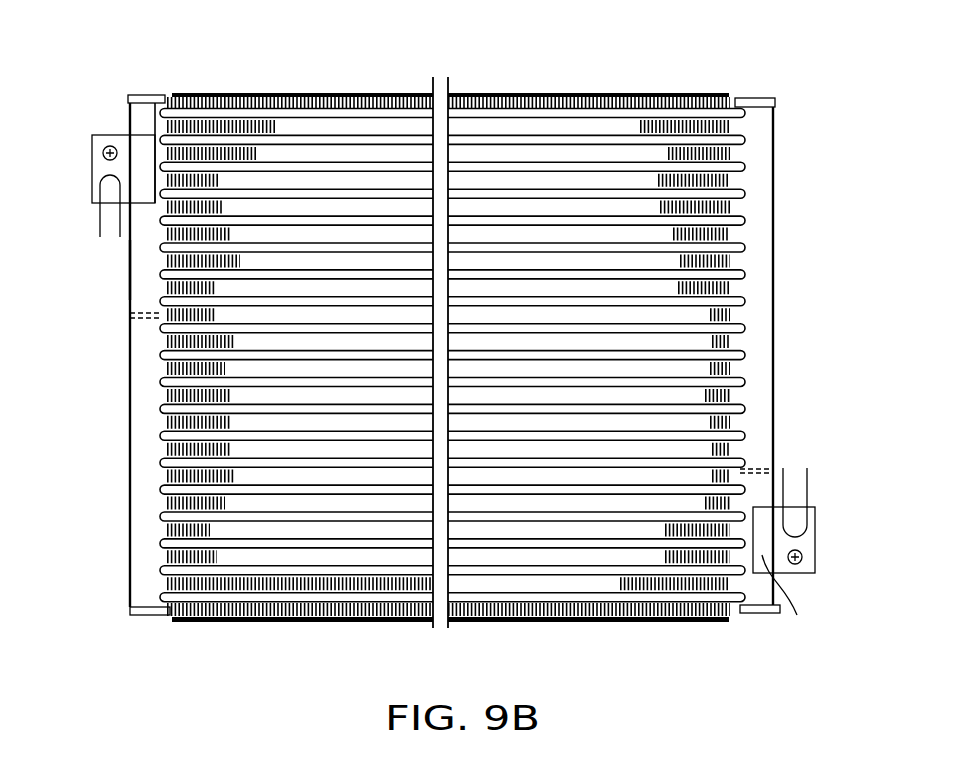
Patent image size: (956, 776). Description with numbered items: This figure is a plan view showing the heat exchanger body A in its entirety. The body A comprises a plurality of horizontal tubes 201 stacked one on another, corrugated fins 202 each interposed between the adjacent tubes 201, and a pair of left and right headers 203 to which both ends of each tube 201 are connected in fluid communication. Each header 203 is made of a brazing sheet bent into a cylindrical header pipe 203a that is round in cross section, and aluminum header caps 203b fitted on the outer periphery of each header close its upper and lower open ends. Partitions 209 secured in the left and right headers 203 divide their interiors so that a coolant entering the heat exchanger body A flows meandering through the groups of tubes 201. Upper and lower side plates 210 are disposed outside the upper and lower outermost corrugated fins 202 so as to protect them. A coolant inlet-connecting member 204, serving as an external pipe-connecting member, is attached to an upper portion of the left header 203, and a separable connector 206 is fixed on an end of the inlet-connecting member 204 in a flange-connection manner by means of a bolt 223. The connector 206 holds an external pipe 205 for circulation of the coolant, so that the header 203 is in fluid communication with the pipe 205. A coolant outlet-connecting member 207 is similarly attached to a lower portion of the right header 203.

The heat exchanger body A is at (642, 87).
The horizontal tubes 201 is at (337, 142).
The corrugated fins 202 is at (265, 117).
The headers 203 is at (138, 390).
The cylindrical header pipe 203a is at (138, 268).
The aluminum header caps 203b is at (144, 96).
The coolant inlet-connecting member 204 is at (145, 150).
The external pipe 205 is at (102, 218).
The separable connector 206 is at (97, 167).
The coolant outlet-connecting member 207 is at (798, 611).
The partitions 209 is at (145, 322).
The upper and lower side plates 210 is at (508, 92).
The bolt 223 is at (104, 149).